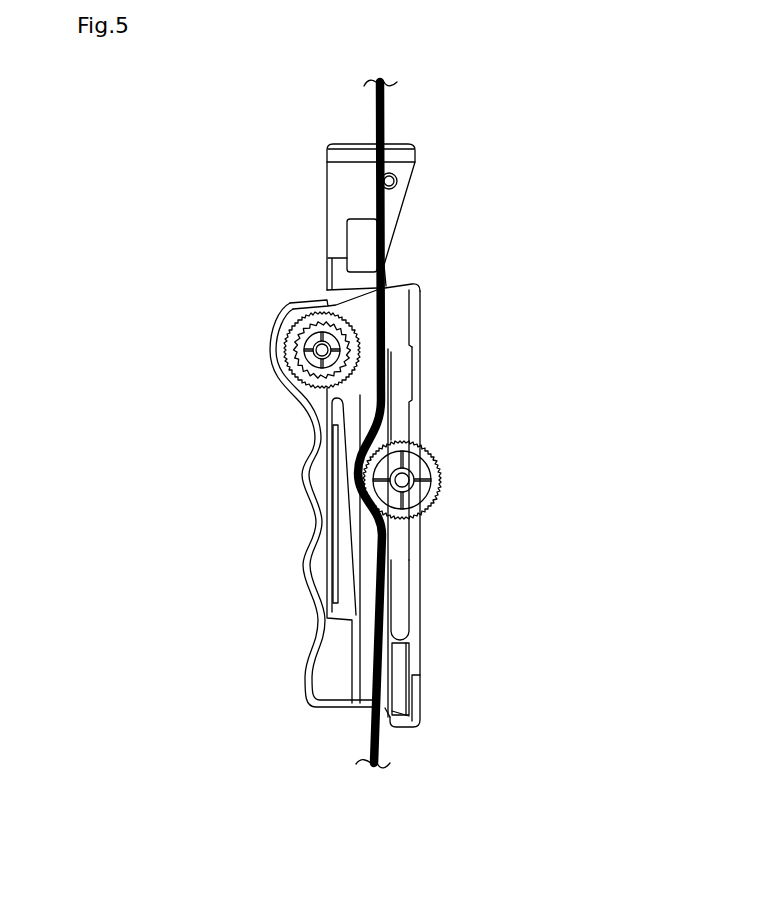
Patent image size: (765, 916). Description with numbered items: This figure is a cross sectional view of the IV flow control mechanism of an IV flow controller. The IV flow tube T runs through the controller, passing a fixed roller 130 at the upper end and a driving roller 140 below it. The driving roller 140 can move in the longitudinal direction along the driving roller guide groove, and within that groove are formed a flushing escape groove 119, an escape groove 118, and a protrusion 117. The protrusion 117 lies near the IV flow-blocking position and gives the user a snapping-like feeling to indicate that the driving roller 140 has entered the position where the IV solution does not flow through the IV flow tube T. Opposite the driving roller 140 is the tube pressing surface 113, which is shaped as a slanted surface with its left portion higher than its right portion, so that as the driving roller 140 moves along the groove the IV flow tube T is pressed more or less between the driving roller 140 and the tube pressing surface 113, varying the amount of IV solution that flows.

The IV flow tube T is at (385, 110).
The fixed roller 130 is at (282, 352).
The tube pressing surface 113 is at (338, 440).
The flushing escape groove 119 is at (412, 347).
The escape groove 118 is at (413, 400).
The driving roller 140 is at (446, 483).
The protrusion 117 is at (408, 616).